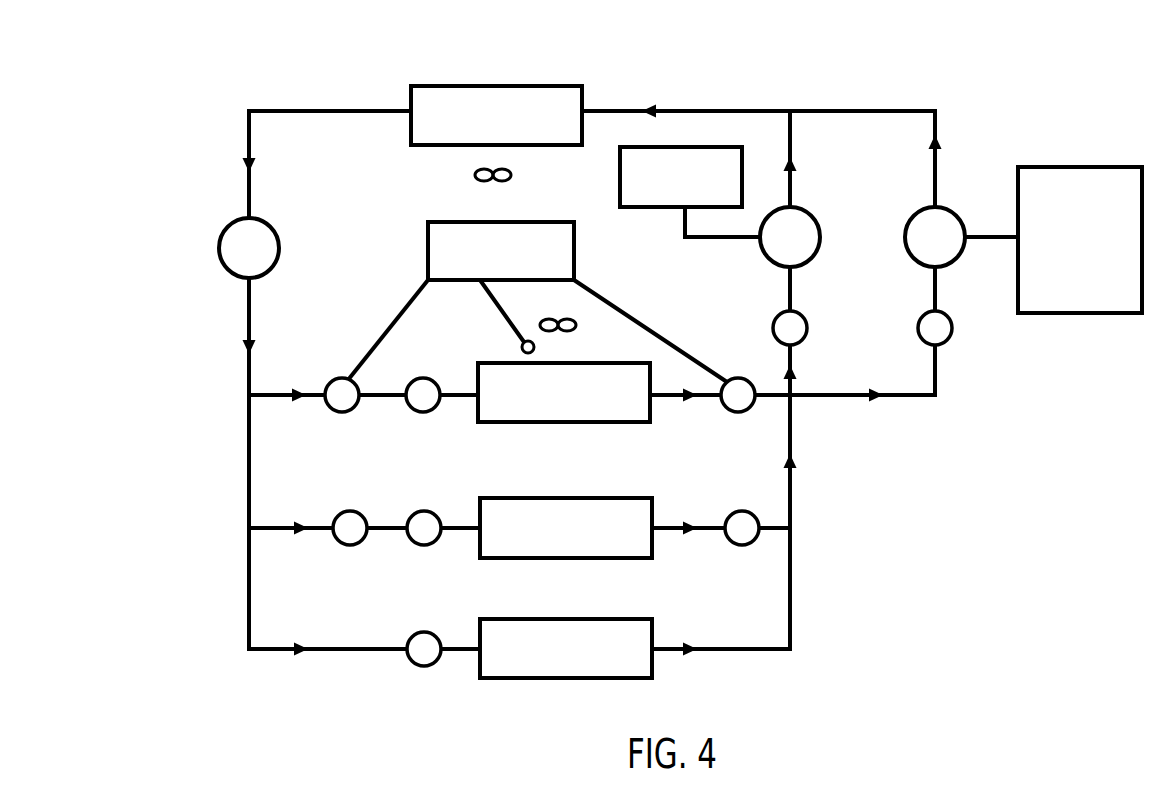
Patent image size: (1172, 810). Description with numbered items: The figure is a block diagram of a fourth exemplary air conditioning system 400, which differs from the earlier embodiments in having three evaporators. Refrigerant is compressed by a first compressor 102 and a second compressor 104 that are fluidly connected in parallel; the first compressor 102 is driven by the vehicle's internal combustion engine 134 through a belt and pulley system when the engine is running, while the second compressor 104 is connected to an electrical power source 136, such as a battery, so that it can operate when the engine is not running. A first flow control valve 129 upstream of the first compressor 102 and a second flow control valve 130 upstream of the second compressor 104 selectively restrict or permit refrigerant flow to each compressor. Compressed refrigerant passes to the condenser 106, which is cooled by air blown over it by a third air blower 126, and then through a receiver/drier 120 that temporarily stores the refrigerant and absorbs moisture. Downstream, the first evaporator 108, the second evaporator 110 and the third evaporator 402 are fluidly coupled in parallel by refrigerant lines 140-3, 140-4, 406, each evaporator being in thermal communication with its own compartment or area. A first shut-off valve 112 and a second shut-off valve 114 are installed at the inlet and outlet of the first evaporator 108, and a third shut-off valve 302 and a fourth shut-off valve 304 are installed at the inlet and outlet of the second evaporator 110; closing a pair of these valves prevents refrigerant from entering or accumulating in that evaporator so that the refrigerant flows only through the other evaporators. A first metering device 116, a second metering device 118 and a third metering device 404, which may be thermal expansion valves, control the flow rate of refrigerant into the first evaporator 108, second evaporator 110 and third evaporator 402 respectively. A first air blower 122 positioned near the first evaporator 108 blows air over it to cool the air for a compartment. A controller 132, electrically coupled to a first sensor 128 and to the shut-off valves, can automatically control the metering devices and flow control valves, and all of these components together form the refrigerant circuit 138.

The air conditioning system 400 is at (187, 39).
The first compressor 102 is at (808, 207).
The second compressor 104 is at (948, 211).
The condenser 106 is at (517, 85).
The first evaporator 108 is at (538, 424).
The second evaporator 110 is at (585, 559).
The first shut-off valve 112 is at (342, 413).
The second shut-off valve 114 is at (737, 413).
The first metering device 116 is at (423, 413).
The second metering device 118 is at (424, 546).
The receiver/drier 120 is at (224, 228).
The first air blower 122 is at (572, 333).
The third air blower 126 is at (470, 178).
The first sensor 128 is at (520, 349).
The first flow control valve 129 is at (802, 314).
The second flow control valve 130 is at (950, 340).
The controller 132 is at (428, 245).
The internal combustion engine 134 is at (618, 175).
The electrical power source 136 is at (1073, 166).
The refrigerant circuit 138 is at (852, 485).
The refrigerant line 140-3 is at (278, 392).
The refrigerant line 140-4 is at (278, 524).
The third shut-off valve 302 is at (352, 546).
The fourth shut-off valve 304 is at (742, 546).
The third evaporator 402 is at (585, 680).
The third metering device 404 is at (423, 667).
The refrigerant line 406 is at (272, 651).